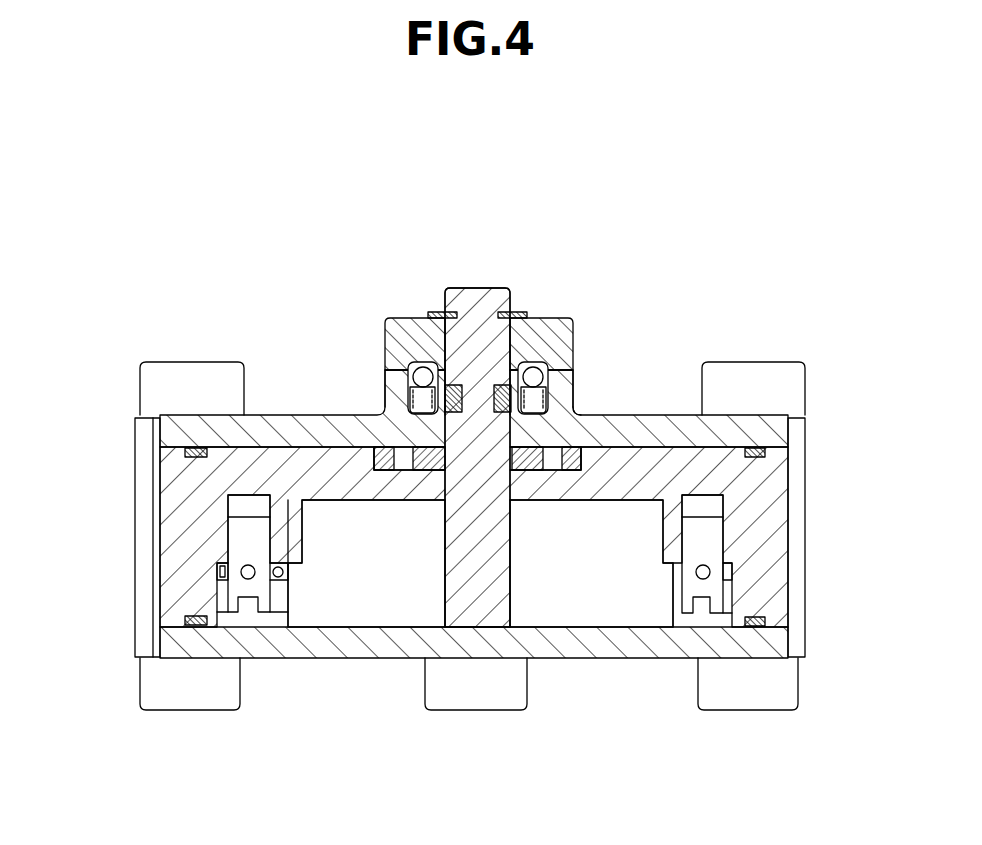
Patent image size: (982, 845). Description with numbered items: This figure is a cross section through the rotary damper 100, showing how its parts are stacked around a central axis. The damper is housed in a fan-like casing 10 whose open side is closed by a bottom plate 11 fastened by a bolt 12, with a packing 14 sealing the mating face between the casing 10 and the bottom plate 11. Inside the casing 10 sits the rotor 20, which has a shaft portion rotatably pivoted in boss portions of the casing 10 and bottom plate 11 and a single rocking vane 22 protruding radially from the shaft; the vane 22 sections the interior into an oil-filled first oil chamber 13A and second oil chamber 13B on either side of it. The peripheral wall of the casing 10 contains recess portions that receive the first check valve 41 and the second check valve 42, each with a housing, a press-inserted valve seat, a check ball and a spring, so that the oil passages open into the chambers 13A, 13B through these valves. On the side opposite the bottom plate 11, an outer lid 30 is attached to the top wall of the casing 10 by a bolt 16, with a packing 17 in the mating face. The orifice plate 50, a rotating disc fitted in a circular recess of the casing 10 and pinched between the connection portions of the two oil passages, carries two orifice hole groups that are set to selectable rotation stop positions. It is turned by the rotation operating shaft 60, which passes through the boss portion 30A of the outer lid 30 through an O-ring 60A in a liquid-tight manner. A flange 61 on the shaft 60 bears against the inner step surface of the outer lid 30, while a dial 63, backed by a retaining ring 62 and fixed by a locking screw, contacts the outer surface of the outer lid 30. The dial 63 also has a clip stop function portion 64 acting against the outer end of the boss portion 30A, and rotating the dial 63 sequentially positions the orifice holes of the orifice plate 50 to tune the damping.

The rotary damper 100 is at (247, 303).
The casing 10 is at (160, 517).
The bottom plate 11 is at (387, 637).
The bolt 12 is at (163, 688).
The first oil chamber 13A is at (605, 608).
The second oil chamber 13B is at (328, 612).
The packing 14 is at (200, 618).
The bolt 16 is at (165, 393).
The packing 17 is at (172, 462).
The rotor 20 is at (435, 548).
The rocking vane 22 is at (455, 573).
The outer lid 30 is at (298, 413).
The boss portion 30A is at (385, 390).
The first check valve 41 is at (219, 542).
The second check valve 42 is at (723, 546).
The orifice plate 50 is at (578, 415).
The rotation operating shaft 60 is at (470, 297).
The O-ring 60A is at (545, 372).
The flange 61 is at (522, 462).
The retaining ring 62 is at (518, 313).
The dial 63 is at (440, 311).
The clip stop function portion 64 is at (575, 355).